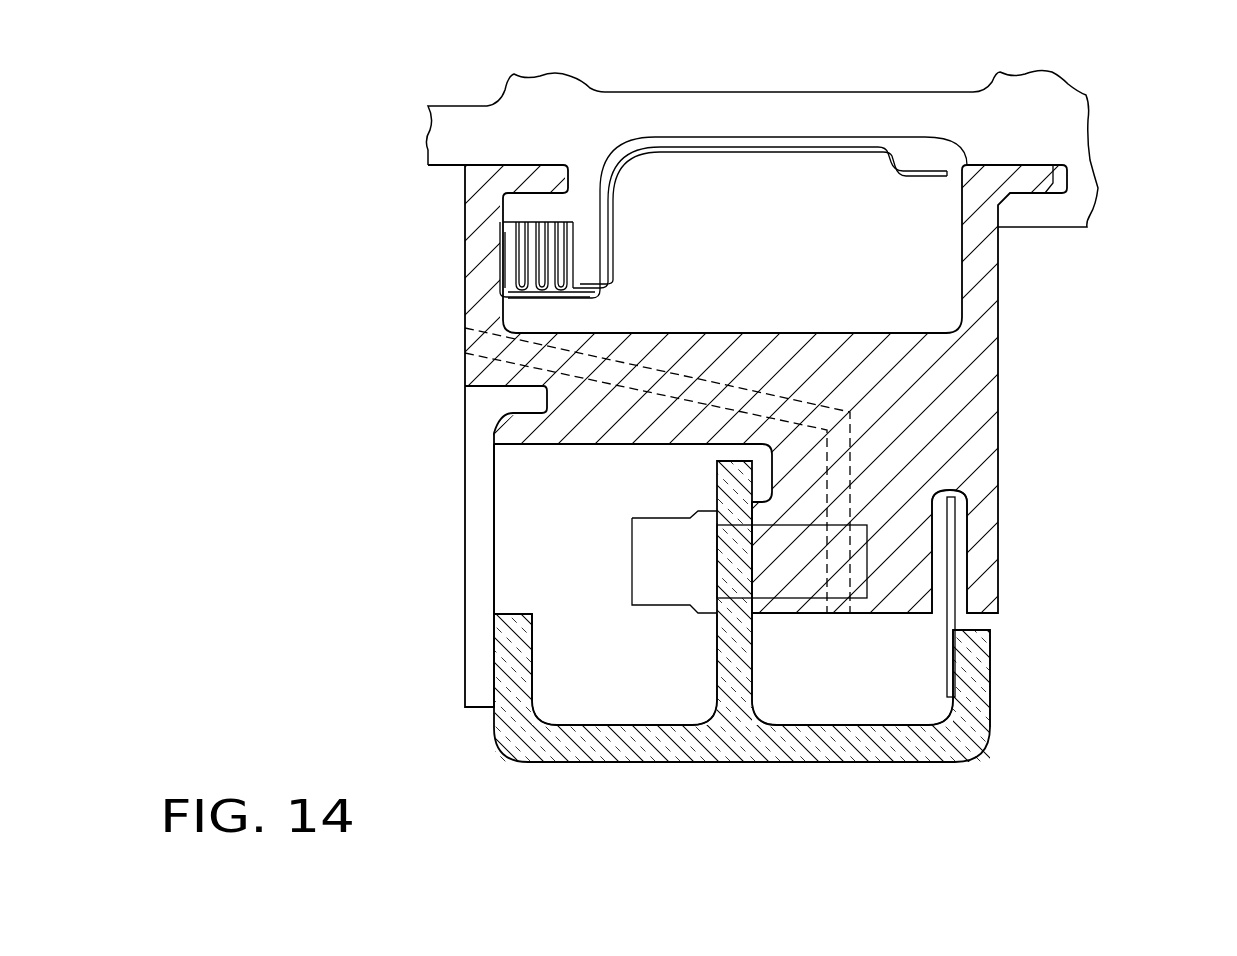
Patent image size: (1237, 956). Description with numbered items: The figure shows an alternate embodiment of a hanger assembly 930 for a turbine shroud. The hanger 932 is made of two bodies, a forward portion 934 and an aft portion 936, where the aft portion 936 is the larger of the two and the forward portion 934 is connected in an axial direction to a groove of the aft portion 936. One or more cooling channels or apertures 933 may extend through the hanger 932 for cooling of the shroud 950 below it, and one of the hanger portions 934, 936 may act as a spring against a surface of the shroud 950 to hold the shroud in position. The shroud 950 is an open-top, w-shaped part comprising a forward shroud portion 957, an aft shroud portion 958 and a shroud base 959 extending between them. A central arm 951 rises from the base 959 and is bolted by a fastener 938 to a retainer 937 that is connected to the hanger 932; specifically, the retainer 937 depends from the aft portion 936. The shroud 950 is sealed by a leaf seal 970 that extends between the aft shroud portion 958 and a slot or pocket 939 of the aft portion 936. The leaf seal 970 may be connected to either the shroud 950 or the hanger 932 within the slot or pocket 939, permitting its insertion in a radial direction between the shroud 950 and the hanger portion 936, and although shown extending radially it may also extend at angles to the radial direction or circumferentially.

The hanger assembly 930 is at (1124, 94).
The hanger 932 is at (722, 272).
The cooling channels or apertures 933 is at (665, 380).
The forward portion 934 is at (448, 442).
The aft portion 936 is at (1024, 336).
The retainer 937 is at (797, 481).
The fastener 938 is at (651, 552).
The slot or pocket 939 is at (958, 513).
The shroud 950 is at (960, 772).
The central arm 951 is at (733, 672).
The forward shroud portion 957 is at (512, 663).
The aft shroud portion 958 is at (972, 685).
The shroud base 959 is at (798, 732).
The leaf seal 970 is at (945, 620).